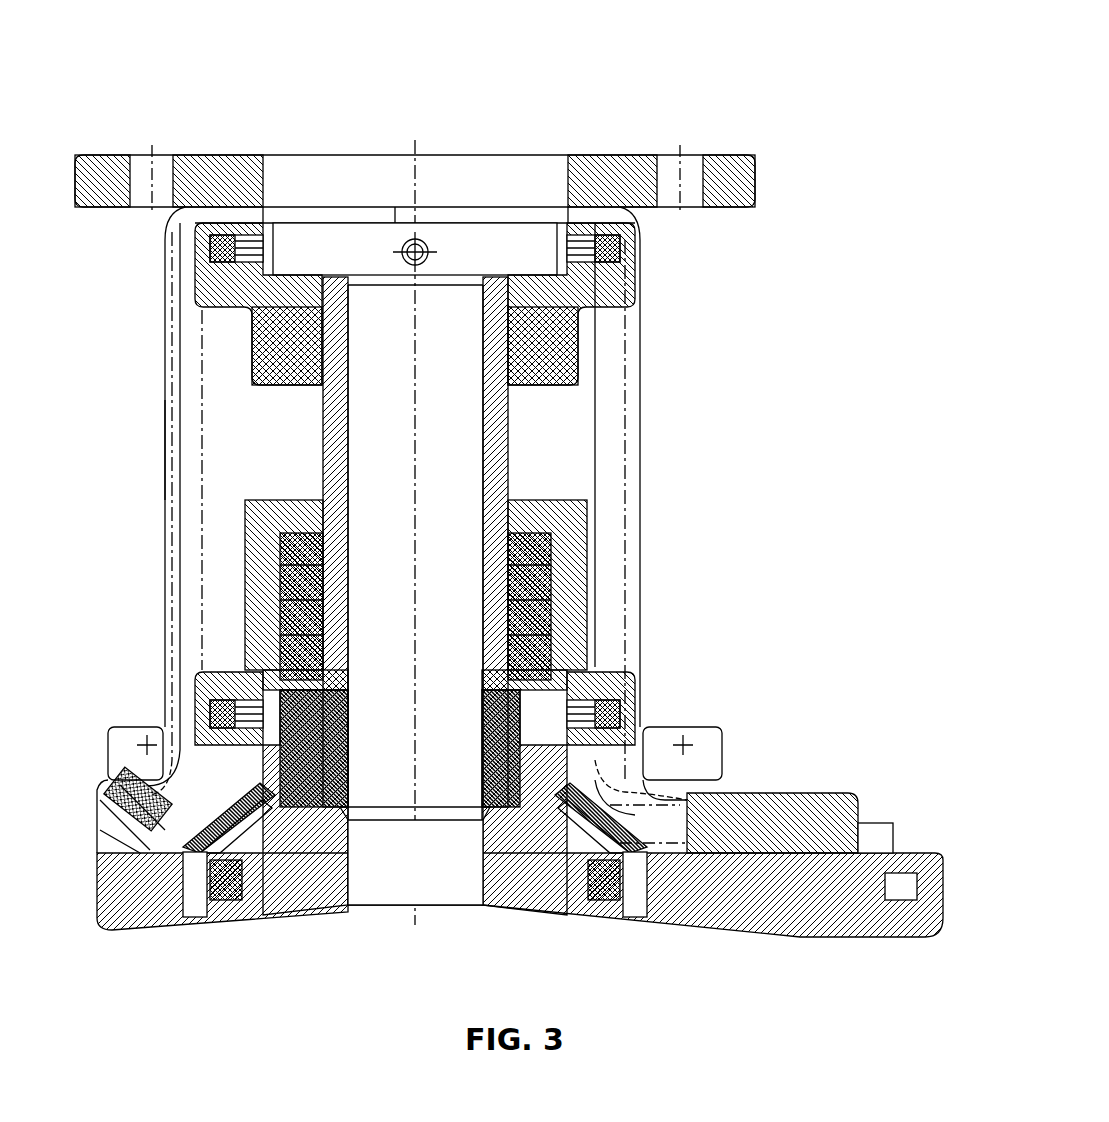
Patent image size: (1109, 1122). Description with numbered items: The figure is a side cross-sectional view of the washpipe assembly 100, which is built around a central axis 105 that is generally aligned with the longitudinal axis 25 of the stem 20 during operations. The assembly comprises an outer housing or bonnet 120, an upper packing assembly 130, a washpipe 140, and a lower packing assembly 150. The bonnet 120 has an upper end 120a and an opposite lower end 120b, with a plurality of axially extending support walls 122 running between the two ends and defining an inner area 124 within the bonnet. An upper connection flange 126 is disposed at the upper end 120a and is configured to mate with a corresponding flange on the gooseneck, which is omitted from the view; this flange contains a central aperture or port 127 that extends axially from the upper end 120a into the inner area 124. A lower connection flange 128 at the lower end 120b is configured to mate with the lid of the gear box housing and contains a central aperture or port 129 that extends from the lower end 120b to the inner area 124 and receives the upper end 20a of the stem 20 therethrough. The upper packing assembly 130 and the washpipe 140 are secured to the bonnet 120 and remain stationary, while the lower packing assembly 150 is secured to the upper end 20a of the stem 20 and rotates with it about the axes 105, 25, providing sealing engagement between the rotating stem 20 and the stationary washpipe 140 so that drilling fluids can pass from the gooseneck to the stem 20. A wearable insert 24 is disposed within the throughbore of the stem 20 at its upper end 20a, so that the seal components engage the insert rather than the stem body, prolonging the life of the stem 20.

The washpipe assembly 100 is at (496, 506).
The central axis 105 is at (418, 190).
The bonnet 120 is at (158, 402).
The upper end 120a is at (449, 161).
The lower end 120b is at (520, 835).
The support walls 122 is at (162, 445).
The inner area 124 is at (572, 405).
The upper connection flange 126 is at (763, 190).
The central aperture or port 127 is at (262, 168).
The lower connection flange 128 is at (772, 793).
The central aperture or port 129 is at (680, 805).
The upper packing assembly 130 is at (645, 285).
The washpipe 140 is at (515, 474).
The lower packing assembly 150 is at (592, 580).
The stem 20 is at (248, 880).
The upper end 20a is at (262, 690).
The wearable insert 24 is at (340, 735).
The longitudinal axis 25 is at (418, 905).